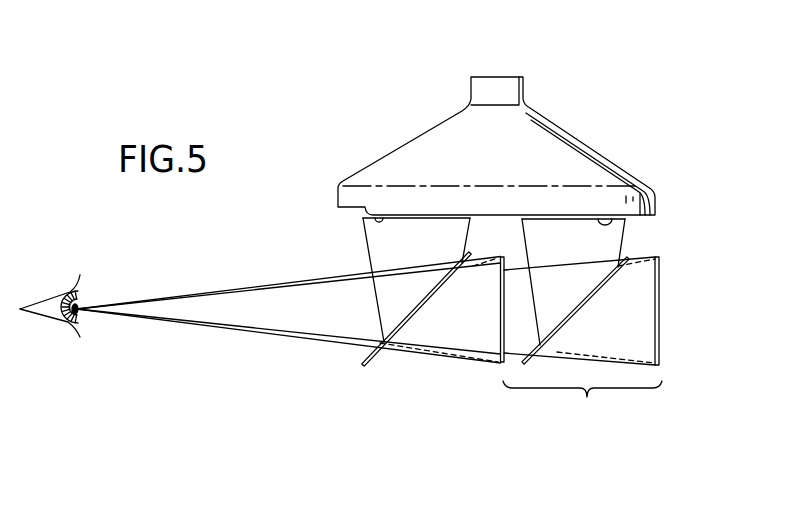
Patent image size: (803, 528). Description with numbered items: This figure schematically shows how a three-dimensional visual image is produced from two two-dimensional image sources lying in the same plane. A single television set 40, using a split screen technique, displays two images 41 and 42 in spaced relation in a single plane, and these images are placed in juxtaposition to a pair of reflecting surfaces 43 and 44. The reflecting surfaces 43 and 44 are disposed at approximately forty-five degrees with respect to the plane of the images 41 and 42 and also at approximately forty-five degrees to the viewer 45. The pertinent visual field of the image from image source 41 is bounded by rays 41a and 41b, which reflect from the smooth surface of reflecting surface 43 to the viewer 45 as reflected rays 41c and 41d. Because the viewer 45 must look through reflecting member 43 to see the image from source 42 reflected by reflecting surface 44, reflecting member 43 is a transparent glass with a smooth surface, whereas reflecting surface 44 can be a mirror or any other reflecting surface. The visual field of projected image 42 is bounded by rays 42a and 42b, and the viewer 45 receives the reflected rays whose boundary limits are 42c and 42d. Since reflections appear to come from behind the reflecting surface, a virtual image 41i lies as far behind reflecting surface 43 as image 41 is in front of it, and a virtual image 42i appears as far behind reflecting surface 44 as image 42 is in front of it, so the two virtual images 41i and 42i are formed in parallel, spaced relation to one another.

The television screen 40 is at (577, 139).
The image 41 is at (383, 269).
The image boundary ray 41a is at (366, 236).
The image boundary ray 41b is at (466, 238).
The reflected ray 41c is at (310, 281).
The reflected ray 41d is at (330, 343).
The virtual image 41i is at (497, 343).
The image 42 is at (609, 263).
The visual field boundary ray 42a is at (527, 241).
The visual field boundary ray 42b is at (623, 240).
The reflected ray 42c is at (545, 268).
The reflected ray 42d is at (562, 351).
The virtual image 42i is at (660, 337).
The reflecting surface 43 is at (377, 353).
The reflecting surface 44 is at (603, 283).
The viewer 45 is at (40, 317).